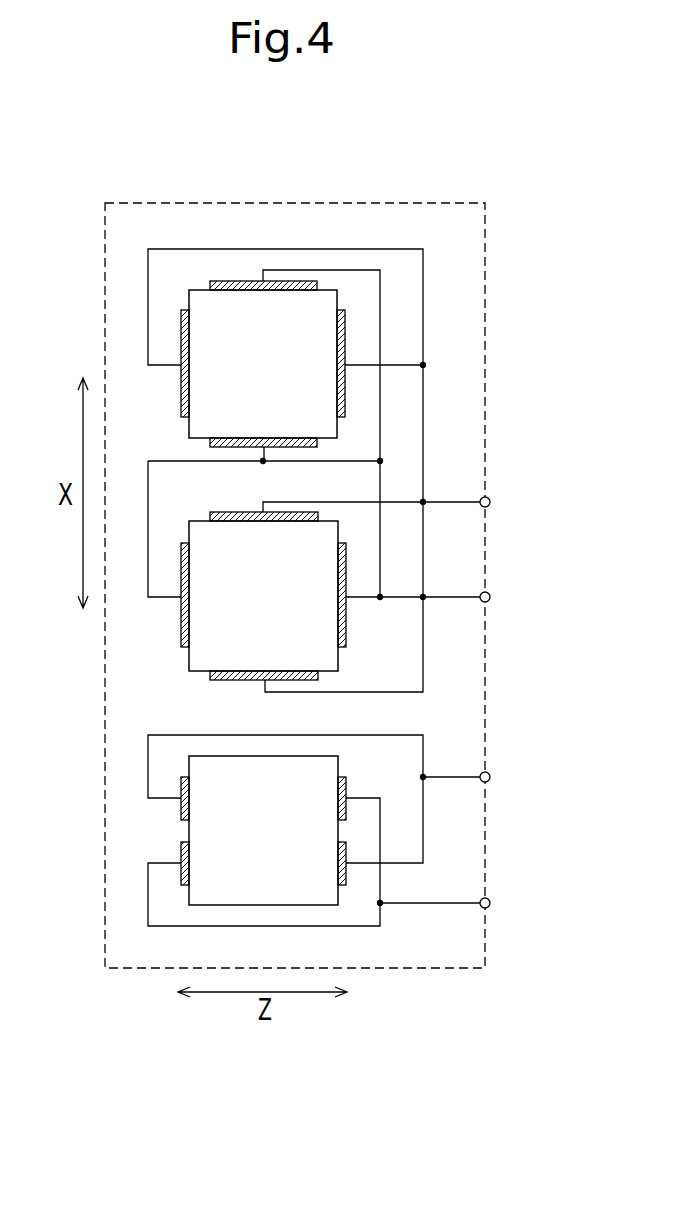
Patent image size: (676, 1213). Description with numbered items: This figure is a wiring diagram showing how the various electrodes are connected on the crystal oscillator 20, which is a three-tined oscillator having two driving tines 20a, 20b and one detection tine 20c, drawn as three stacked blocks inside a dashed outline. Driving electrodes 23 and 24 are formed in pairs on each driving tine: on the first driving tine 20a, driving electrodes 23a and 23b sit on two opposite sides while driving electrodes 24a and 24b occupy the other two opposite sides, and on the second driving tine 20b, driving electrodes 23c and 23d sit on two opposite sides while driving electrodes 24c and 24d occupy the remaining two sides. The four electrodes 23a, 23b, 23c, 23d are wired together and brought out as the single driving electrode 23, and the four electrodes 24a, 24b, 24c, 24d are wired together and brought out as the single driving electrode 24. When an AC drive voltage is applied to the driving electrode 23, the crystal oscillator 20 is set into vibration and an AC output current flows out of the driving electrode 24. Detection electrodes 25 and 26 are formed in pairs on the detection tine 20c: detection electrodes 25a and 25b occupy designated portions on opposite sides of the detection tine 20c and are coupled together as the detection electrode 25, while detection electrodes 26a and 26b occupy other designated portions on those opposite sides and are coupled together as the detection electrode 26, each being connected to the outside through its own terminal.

The crystal oscillator 20 is at (373, 192).
The driving tine 20a is at (204, 302).
The driving tine 20b is at (200, 653).
The detection tine 20c is at (200, 893).
The driving electrode 23 is at (491, 502).
The driving electrode 23a is at (181, 387).
The driving electrode 23b is at (343, 320).
The driving electrode 23c is at (245, 512).
The driving electrode 23d is at (241, 681).
The driving electrode 24 is at (491, 597).
The driving electrode 24a is at (237, 281).
The driving electrode 24b is at (205, 447).
The driving electrode 24c is at (181, 621).
The driving electrode 24d is at (347, 610).
The detection electrode 25 is at (491, 777).
The detection electrode 25a is at (181, 783).
The detection electrode 25b is at (346, 877).
The detection electrode 26 is at (491, 903).
The detection electrode 26a is at (181, 848).
The detection electrode 26b is at (346, 792).